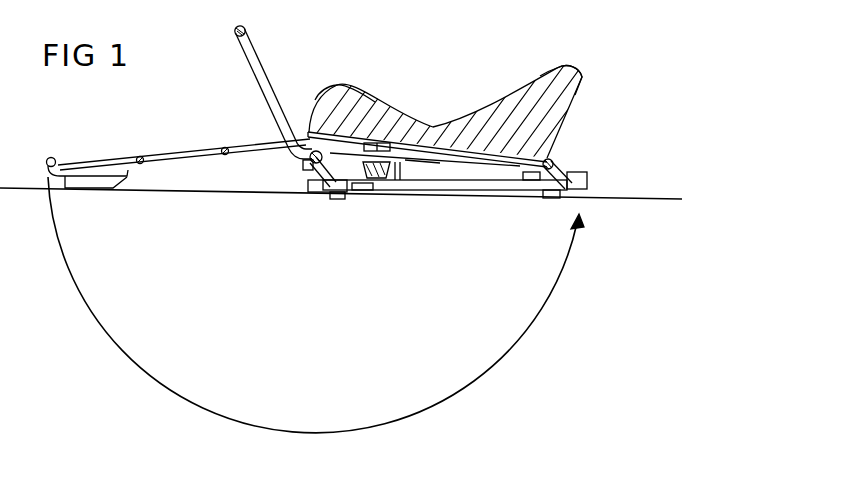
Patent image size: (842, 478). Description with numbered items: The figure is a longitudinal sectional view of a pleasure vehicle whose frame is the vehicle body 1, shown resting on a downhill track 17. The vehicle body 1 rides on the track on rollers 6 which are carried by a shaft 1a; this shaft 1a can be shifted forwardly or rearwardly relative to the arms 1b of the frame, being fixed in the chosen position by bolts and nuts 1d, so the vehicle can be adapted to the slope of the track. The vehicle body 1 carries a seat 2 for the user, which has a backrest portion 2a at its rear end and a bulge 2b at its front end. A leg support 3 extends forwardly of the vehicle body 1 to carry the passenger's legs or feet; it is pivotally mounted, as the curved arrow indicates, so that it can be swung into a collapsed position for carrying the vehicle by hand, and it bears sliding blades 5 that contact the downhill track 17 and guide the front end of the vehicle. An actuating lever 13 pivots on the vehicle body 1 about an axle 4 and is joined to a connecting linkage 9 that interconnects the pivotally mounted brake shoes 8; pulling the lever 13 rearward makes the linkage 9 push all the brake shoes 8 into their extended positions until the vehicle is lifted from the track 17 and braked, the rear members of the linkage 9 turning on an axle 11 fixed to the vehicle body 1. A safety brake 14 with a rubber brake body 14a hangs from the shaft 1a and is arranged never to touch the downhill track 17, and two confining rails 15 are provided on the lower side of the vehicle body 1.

The vehicle body 1 is at (470, 133).
The shaft 1a is at (384, 178).
The arms 1b is at (411, 160).
The nuts 1d is at (386, 140).
The seat 2 is at (517, 111).
The backrest portion 2a is at (564, 79).
The bulge 2b is at (350, 100).
The leg support 3 is at (104, 161).
The axle 4 is at (309, 160).
The sliding blades 5 is at (98, 183).
The rollers 6 is at (371, 145).
The brake shoes 8 is at (334, 186).
The connecting linkage 9 is at (580, 172).
The axle 11 is at (554, 162).
The actuating lever 13 is at (260, 72).
The safety brake 14 is at (377, 183).
The brake body 14a is at (366, 192).
The confining rails 15 is at (481, 184).
The downhill track 17 is at (171, 191).